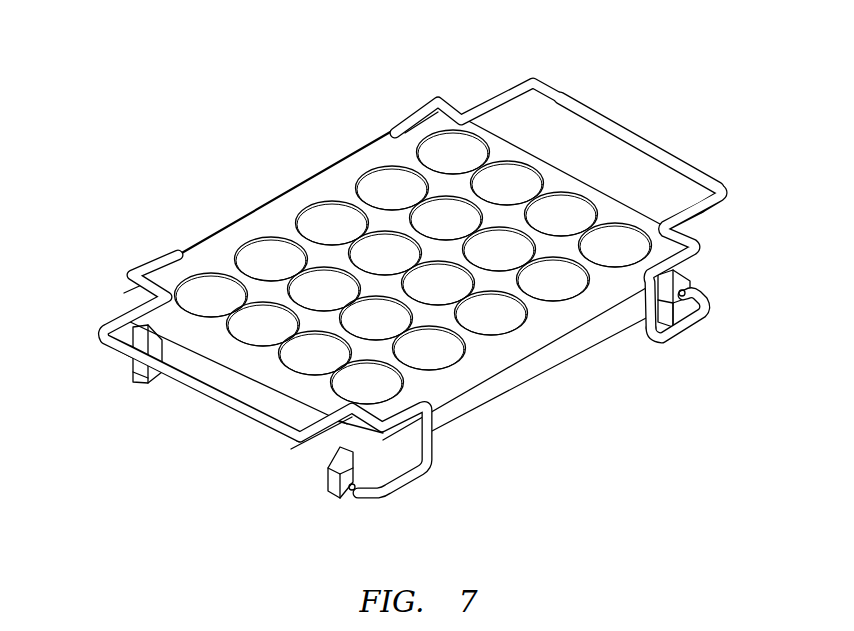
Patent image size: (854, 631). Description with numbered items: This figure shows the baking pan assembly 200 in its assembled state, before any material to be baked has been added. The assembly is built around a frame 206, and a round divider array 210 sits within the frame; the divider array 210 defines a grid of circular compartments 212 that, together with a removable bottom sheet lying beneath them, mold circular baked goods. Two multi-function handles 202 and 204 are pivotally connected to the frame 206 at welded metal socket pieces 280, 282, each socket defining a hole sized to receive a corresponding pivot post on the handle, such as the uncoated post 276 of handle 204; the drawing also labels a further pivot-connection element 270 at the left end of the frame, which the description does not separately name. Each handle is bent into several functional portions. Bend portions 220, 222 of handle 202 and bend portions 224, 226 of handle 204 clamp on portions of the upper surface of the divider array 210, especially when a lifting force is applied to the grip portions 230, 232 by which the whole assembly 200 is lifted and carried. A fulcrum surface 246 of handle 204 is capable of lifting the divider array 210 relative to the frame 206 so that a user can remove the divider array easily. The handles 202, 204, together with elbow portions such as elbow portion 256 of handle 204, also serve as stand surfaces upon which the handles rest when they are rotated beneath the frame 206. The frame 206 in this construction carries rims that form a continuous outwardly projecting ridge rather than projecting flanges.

The baking pan assembly 200 is at (221, 141).
The multi-function handle 202 is at (202, 406).
The multi-function handle 204 is at (420, 257).
The frame 206 is at (548, 389).
The round divider array 210 is at (218, 225).
The compartments 212 is at (324, 192).
The bend portion 220 is at (108, 303).
The bend portion 222 is at (338, 452).
The bend portion 224 is at (459, 112).
The bend portion 226 is at (672, 232).
The grip portion 230 is at (227, 424).
The grip portion 232 is at (674, 156).
The fulcrum surface 246 is at (638, 302).
The elbow portion 256 is at (670, 343).
The first clip 270 is at (121, 371).
The uncoated pivot post 276 is at (729, 298).
The welded metal socket piece 280 is at (131, 383).
The welded metal socket piece 282 is at (327, 506).